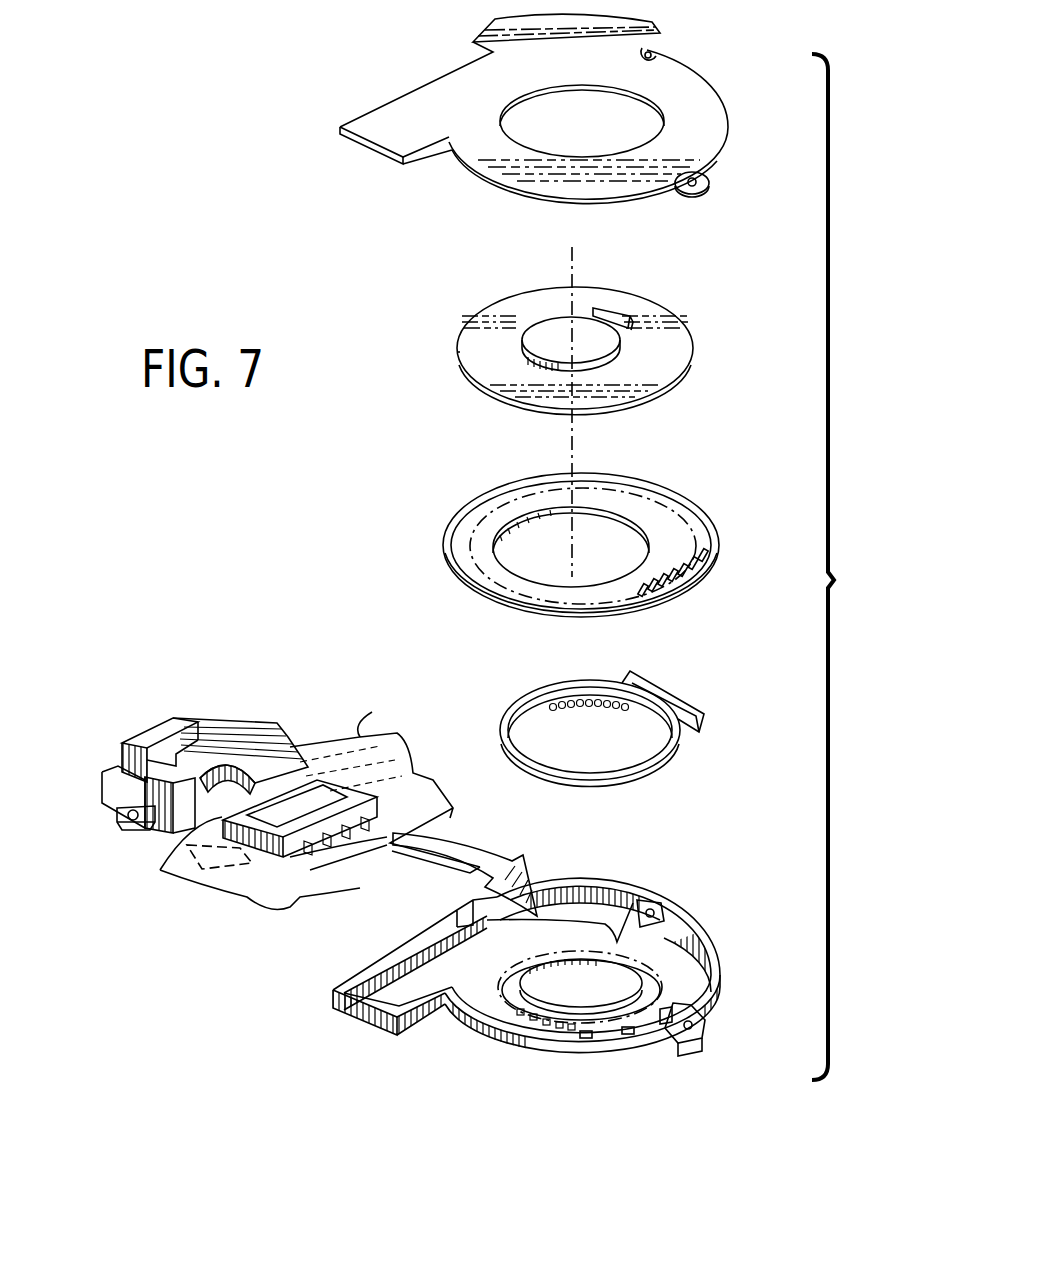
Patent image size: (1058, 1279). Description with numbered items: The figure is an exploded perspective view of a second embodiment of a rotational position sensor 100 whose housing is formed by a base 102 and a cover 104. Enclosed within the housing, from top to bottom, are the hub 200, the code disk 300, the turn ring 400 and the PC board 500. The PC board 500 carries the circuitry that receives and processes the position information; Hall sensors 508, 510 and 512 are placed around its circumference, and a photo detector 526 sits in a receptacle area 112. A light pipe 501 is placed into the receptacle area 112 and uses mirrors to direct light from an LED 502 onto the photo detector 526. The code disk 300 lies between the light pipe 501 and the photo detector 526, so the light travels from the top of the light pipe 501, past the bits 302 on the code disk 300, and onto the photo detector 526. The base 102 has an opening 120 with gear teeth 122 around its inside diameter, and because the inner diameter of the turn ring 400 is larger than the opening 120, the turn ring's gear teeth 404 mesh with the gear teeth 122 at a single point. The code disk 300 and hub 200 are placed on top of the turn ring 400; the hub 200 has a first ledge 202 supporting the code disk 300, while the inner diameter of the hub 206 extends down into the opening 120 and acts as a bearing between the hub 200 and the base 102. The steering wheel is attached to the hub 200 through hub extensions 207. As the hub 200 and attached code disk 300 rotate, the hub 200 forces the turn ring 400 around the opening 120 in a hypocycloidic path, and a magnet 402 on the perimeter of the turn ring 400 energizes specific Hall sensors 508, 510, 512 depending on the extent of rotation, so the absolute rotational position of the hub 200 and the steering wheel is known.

The sensor 100 is at (888, 597).
The base 102 is at (726, 976).
The cover 104 is at (712, 88).
The receptacle area 112 is at (583, 892).
The opening 120 is at (534, 988).
The gear teeth 122 is at (547, 1025).
The hub 200 is at (718, 312).
The first ledge 202 is at (457, 352).
The inner diameter of the hub 206 is at (533, 323).
The hub extensions 207 is at (626, 313).
The code disk 300 is at (442, 527).
The bits 302 is at (716, 562).
The turn ring 400 is at (544, 685).
The magnet 402 is at (672, 703).
The gear teeth 404 is at (573, 712).
The PC board 500 is at (640, 903).
The light pipe 501 is at (220, 723).
The LED 502 is at (118, 812).
The Hall sensor 508 is at (698, 1022).
The Hall sensor 510 is at (628, 1035).
The Hall sensor 512 is at (586, 1040).
The photo detector 526 is at (297, 852).